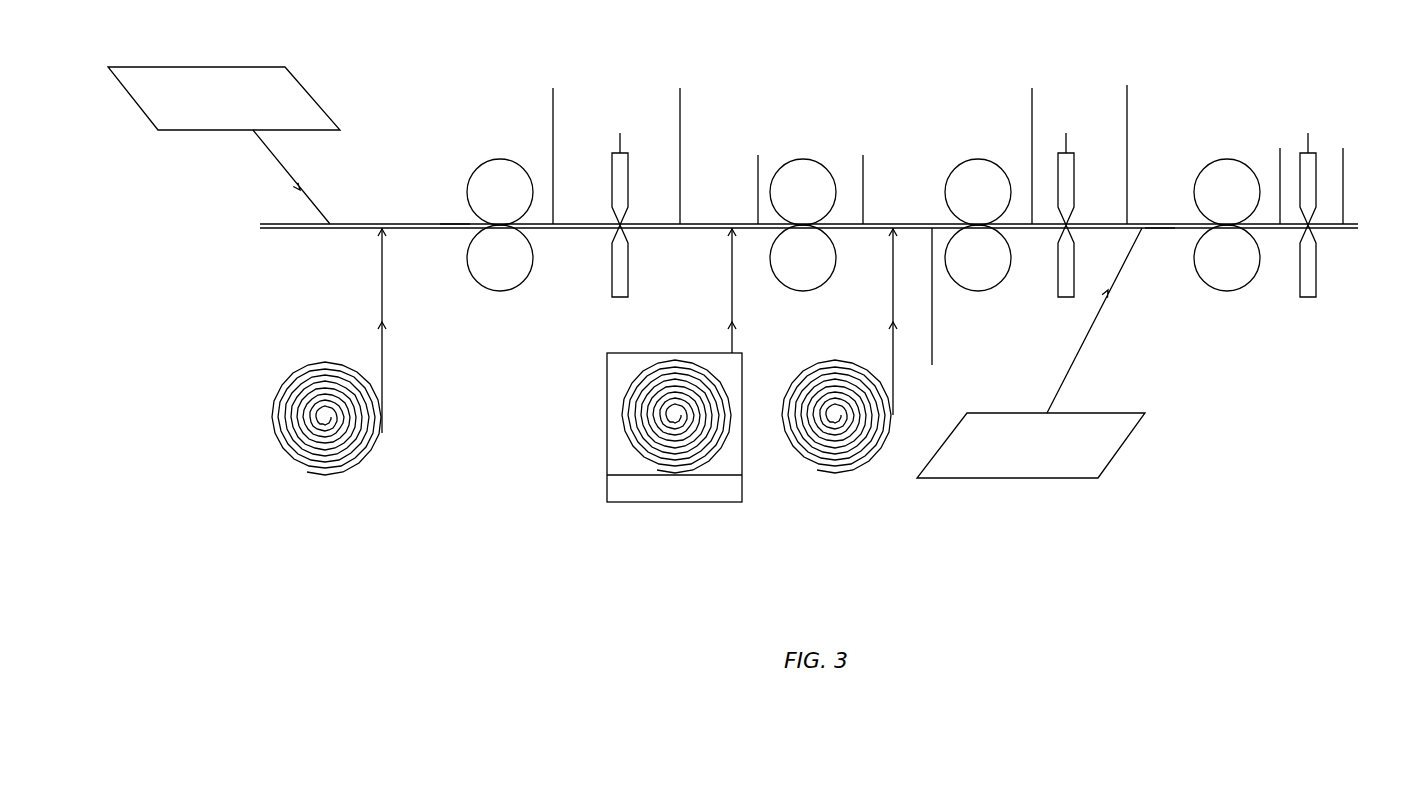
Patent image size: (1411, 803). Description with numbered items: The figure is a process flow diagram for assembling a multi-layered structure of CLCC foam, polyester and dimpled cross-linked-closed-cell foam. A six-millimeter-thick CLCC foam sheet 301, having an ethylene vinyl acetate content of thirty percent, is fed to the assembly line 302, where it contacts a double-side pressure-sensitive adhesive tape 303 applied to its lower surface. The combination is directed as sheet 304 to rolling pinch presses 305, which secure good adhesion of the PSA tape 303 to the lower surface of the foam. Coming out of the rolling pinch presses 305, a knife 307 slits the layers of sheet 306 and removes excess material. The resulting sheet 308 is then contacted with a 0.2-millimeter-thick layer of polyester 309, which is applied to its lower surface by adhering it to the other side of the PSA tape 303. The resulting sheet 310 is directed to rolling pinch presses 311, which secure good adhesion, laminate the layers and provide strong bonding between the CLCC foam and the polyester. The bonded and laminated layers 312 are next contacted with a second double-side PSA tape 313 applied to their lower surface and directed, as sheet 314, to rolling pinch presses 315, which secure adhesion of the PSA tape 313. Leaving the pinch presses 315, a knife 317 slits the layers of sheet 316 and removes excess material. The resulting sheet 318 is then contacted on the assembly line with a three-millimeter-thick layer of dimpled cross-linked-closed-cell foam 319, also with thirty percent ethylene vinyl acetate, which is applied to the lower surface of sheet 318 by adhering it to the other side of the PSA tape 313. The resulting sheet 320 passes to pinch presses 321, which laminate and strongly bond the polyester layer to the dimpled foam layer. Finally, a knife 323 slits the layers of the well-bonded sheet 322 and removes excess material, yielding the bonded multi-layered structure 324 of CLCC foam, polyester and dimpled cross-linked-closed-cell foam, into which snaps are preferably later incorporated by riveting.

The CLCC foam sheet 301 is at (212, 63).
The assembly line 302 is at (262, 224).
The double-side pressure-sensitive adhesive tape 303 is at (325, 475).
The sheet 304 is at (452, 236).
The rolling pinch presses 305 is at (500, 292).
The sheet 306 is at (557, 144).
The knife 307 is at (625, 203).
The resulting sheet 308 is at (684, 144).
The polyester layer 309 is at (607, 455).
The resulting sheet 310 is at (760, 180).
The rolling pinch presses 311 is at (803, 158).
The bonded and laminated layers 312 is at (865, 180).
The double-side PSA tape 313 is at (835, 475).
The sheet 314 is at (935, 310).
The rolling pinch presses 315 is at (978, 158).
The sheet 316 is at (1035, 144).
The knife 317 is at (1070, 203).
The resulting sheet 318 is at (1130, 143).
The dimpled cross-linked-closed-cell foam 319 is at (1120, 447).
The resulting sheet 320 is at (1160, 236).
The pinch presses 321 is at (1227, 158).
The well-bonded sheet 322 is at (1282, 177).
The knife 323 is at (1313, 202).
The bonded multi-layered structure 324 is at (1345, 177).